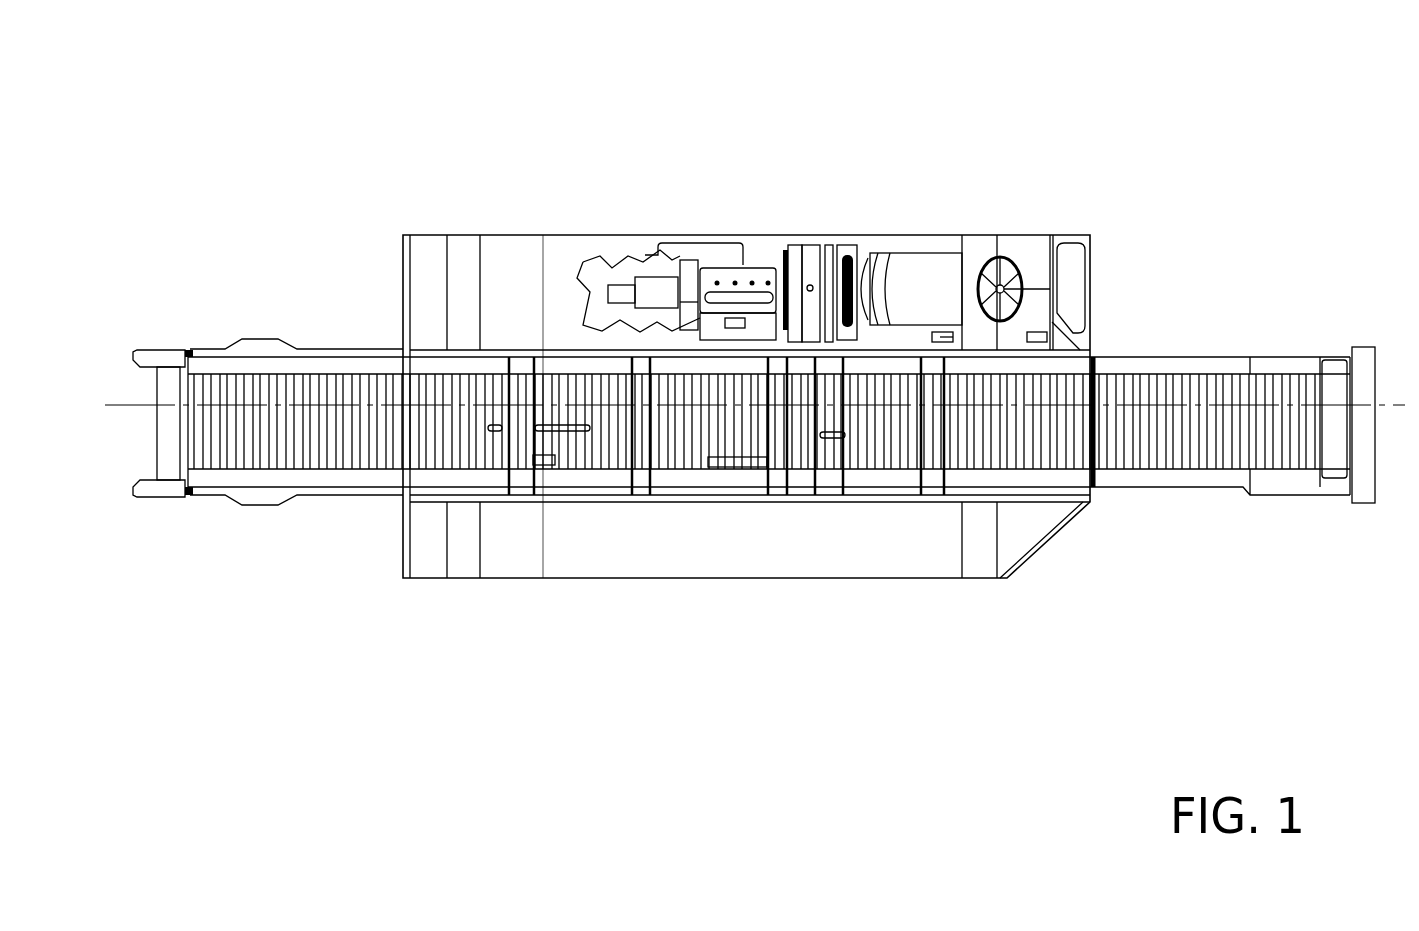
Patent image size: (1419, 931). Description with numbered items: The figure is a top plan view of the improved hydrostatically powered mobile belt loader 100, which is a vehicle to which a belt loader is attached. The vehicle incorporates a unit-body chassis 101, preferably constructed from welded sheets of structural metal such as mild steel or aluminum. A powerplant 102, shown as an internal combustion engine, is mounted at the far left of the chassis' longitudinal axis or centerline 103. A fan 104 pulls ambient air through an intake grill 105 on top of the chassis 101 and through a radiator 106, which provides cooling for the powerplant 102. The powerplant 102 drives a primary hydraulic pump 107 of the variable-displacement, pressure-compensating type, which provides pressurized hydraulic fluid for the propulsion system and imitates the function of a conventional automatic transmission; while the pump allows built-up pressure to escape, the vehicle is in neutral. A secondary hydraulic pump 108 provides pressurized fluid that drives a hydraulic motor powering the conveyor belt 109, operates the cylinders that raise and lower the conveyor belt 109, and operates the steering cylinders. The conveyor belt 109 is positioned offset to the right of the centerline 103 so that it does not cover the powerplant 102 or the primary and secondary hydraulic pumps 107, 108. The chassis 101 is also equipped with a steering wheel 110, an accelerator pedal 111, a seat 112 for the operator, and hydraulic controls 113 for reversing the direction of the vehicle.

The mobile belt loader 100 is at (785, 97).
The unit-body chassis 101 is at (527, 250).
The powerplant 102 is at (742, 275).
The longitudinal axis or centerline 103 is at (105, 400).
The fan 104 is at (780, 270).
The intake grill 105 is at (862, 250).
The radiator 106 is at (802, 267).
The primary hydraulic pump 107 is at (657, 292).
The secondary hydraulic pump 108 is at (620, 295).
The conveyor belt 109 is at (1152, 450).
The steering wheel 110 is at (1030, 258).
The accelerator pedal 111 is at (1037, 338).
The seat 112 is at (942, 301).
The hydraulic controls 113 is at (953, 337).